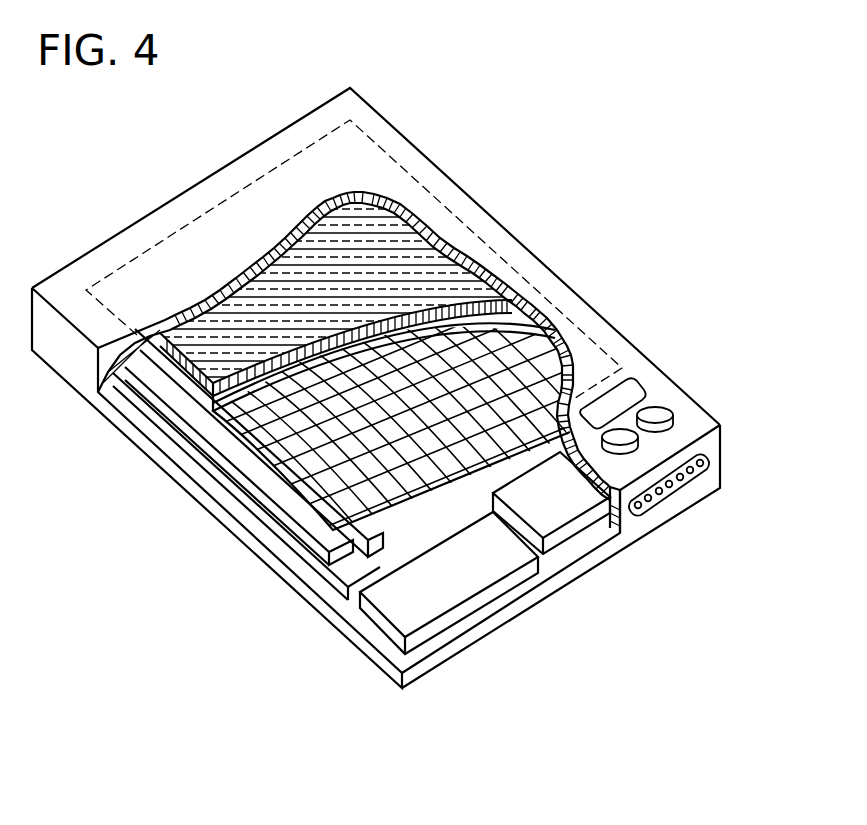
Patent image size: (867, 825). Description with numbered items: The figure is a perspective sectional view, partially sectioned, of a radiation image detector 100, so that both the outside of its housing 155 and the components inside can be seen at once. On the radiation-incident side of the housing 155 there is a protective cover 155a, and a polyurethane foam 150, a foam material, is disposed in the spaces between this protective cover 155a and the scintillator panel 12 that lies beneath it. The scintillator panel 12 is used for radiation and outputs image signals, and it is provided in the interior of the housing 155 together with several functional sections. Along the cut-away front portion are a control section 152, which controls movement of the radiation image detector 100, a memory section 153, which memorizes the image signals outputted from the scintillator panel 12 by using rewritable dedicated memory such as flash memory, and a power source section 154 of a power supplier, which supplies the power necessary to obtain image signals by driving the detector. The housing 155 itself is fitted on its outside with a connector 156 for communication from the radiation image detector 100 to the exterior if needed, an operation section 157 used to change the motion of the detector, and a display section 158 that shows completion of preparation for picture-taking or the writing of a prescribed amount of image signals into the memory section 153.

The radiation image detector 100 is at (527, 143).
The scintillator panel 12 is at (175, 375).
The polyurethane foam 150 is at (427, 283).
The control section 152 is at (584, 553).
The memory section 153 is at (488, 613).
The power source section 154 is at (245, 505).
The housing 155 is at (416, 138).
The protective cover 155a is at (300, 172).
The connector 156 is at (673, 497).
The operation section 157 is at (640, 450).
The display section 158 is at (632, 387).